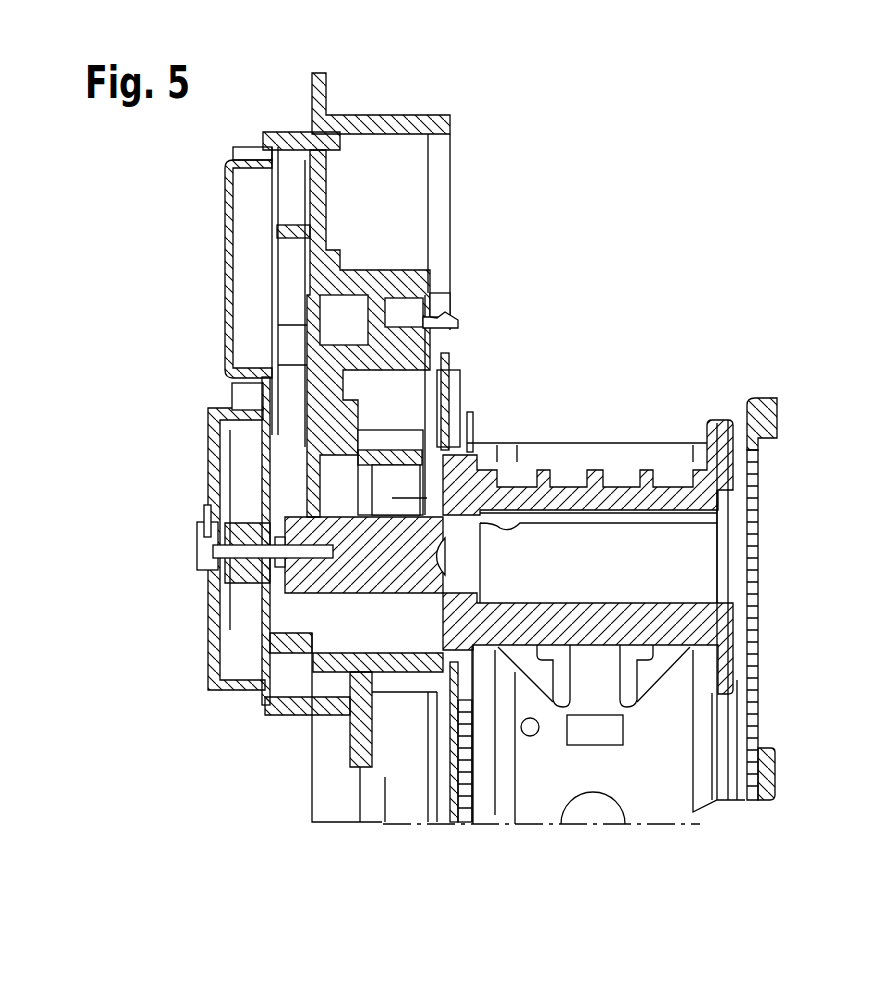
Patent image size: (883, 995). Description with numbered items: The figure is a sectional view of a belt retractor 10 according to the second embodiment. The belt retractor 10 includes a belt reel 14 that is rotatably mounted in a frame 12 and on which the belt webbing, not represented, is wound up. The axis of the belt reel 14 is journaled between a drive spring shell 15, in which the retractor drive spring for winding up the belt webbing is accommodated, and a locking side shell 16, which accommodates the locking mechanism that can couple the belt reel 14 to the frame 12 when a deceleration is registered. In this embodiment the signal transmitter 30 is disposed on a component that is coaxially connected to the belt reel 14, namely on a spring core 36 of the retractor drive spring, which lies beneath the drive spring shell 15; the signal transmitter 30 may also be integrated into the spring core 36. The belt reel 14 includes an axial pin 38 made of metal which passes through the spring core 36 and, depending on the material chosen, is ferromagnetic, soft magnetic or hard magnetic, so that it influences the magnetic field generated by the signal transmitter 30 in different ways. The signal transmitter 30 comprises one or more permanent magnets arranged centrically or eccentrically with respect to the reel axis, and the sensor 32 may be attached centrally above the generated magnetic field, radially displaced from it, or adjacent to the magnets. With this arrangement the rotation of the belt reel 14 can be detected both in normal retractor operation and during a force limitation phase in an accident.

The belt retractor 10 is at (613, 258).
The frame 12 is at (657, 788).
The belt reel 14 is at (623, 503).
The drive spring shell 15 is at (208, 455).
The locking side shell 16 is at (775, 540).
The signal transmitter 30 is at (212, 562).
The sensor 32 is at (207, 513).
The spring core 36 is at (248, 583).
The axial pin 38 is at (287, 577).